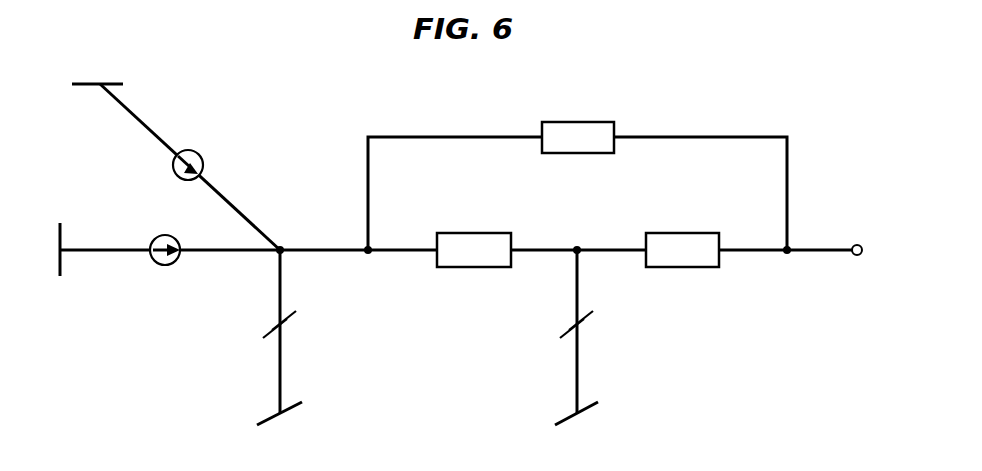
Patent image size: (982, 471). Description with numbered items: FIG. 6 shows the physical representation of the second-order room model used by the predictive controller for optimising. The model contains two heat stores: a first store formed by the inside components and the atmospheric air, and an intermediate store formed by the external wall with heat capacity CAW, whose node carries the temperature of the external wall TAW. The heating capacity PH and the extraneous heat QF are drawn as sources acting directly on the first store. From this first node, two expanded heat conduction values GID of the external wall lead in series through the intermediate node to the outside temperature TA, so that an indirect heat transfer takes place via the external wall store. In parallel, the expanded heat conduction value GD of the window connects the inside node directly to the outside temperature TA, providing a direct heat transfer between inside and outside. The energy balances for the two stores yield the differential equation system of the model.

The heating capacity PH is at (170, 262).
The extraneous heat QF is at (176, 167).
The expanded heat conduction value of the window GD is at (577, 167).
The expanded heat conduction values of the external wall GID is at (612, 268).
The temperature of the external wall TAW is at (578, 233).
The heat capacity of the external wall CAW is at (585, 337).
The outside temperature TA is at (828, 268).